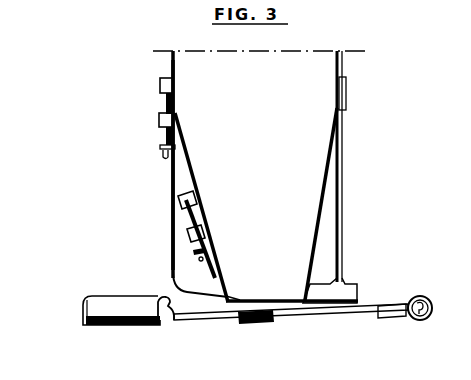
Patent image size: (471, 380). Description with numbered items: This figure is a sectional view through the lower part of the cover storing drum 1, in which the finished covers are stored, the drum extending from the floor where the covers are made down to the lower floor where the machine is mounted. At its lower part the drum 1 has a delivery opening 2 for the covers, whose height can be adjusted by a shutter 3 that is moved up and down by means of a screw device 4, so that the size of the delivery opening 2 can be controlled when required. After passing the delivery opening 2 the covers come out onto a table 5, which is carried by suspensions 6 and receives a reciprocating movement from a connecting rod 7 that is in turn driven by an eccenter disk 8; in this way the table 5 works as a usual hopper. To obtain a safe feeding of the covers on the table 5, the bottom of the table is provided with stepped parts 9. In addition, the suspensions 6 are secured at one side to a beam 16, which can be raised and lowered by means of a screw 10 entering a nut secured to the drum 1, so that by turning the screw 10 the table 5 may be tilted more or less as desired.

The drum 1 is at (290, 181).
The delivery opening 2 is at (236, 299).
The shutter 3 is at (205, 262).
The screw device 4 is at (180, 215).
The table 5 is at (114, 307).
The suspensions 6 is at (172, 180).
The connecting rod 7 is at (367, 307).
The eccenter disk 8 is at (414, 298).
The stepped parts 9 is at (84, 322).
The screw 10 is at (165, 133).
The beam 16 is at (165, 88).